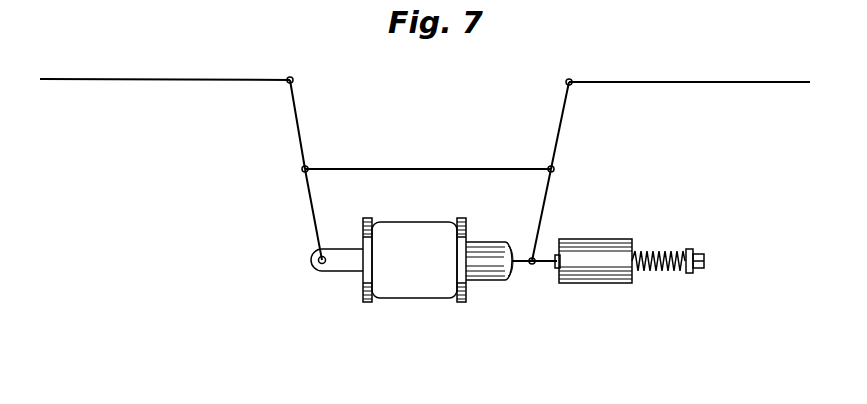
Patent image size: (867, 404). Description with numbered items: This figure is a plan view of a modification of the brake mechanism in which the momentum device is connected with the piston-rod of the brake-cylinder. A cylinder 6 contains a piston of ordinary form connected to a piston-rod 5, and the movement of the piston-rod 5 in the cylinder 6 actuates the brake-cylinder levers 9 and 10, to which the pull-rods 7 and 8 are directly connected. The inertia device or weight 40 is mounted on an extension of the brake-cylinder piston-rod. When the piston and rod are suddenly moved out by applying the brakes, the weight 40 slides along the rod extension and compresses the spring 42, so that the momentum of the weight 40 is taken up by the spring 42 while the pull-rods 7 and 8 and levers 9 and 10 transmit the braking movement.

The piston-rod 5 is at (515, 263).
The cylinder 6 is at (388, 260).
The pull-rod 7 is at (643, 76).
The pull-rod 8 is at (210, 79).
The brake-cylinder lever 9 is at (563, 135).
The brake-cylinder lever 10 is at (297, 125).
The inertia device or weight 40 is at (595, 239).
The spring 42 is at (662, 272).